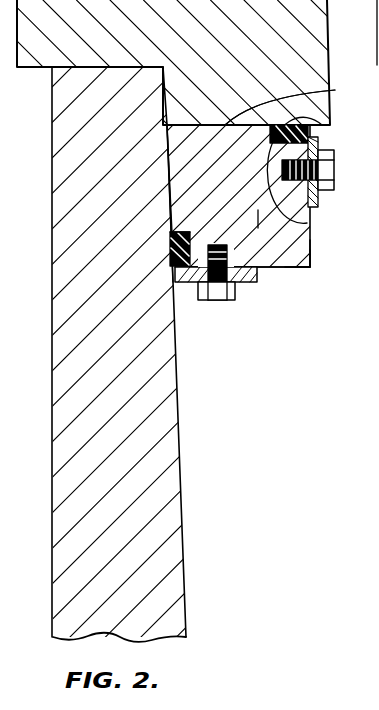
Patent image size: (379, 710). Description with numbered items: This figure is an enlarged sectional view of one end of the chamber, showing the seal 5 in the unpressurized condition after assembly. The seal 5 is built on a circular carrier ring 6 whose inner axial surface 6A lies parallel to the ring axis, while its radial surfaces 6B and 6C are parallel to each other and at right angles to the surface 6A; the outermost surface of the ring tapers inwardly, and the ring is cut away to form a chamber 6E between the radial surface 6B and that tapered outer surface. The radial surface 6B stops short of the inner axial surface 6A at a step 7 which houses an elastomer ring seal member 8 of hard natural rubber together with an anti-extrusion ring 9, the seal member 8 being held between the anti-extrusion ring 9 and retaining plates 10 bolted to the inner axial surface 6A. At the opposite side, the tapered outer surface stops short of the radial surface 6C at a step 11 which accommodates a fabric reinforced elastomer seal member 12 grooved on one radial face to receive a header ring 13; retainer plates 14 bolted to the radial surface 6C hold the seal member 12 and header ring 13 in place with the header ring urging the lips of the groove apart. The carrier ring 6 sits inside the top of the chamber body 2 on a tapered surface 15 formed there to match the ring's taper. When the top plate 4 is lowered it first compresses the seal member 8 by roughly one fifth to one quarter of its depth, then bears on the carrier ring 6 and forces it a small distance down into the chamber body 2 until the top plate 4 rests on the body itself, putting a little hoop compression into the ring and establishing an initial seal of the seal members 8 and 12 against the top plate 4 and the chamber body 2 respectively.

The chamber body 2 is at (119, 409).
The top plate 4 is at (245, 53).
The seal 5 is at (301, 276).
The carrier ring 6 is at (293, 268).
The inner axial surface 6A is at (308, 266).
The radial surface 6B is at (295, 101).
The radial surface 6C is at (268, 268).
The chamber 6E is at (177, 138).
The step 7 is at (326, 127).
The elastomer ring seal member 8 is at (319, 166).
The anti-extrusion ring 9 is at (305, 236).
The retaining plates 10 is at (318, 197).
The step 11 is at (170, 248).
The elastomer seal member 12 is at (171, 256).
The header ring 13 is at (178, 284).
The retainer plates 14 is at (188, 291).
The tapered surface 15 is at (179, 401).